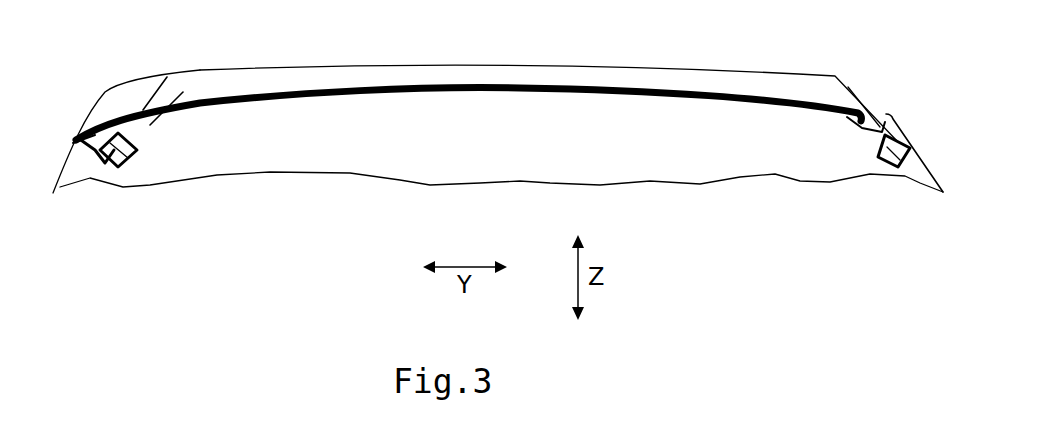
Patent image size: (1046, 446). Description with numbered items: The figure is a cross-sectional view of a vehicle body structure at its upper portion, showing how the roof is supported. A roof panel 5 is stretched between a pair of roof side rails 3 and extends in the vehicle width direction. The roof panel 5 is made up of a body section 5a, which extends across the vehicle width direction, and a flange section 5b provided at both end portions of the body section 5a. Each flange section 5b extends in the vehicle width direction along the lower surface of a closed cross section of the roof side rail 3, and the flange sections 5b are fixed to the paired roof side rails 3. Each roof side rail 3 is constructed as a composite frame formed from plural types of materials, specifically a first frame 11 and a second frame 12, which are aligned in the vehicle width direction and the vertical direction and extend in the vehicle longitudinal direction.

The roof side rail 3 is at (197, 235).
The roof panel 5 is at (593, 72).
The body section 5a is at (768, 83).
The flange section 5b is at (183, 92).
The first frame 11 is at (130, 143).
The second frame 12 is at (103, 163).